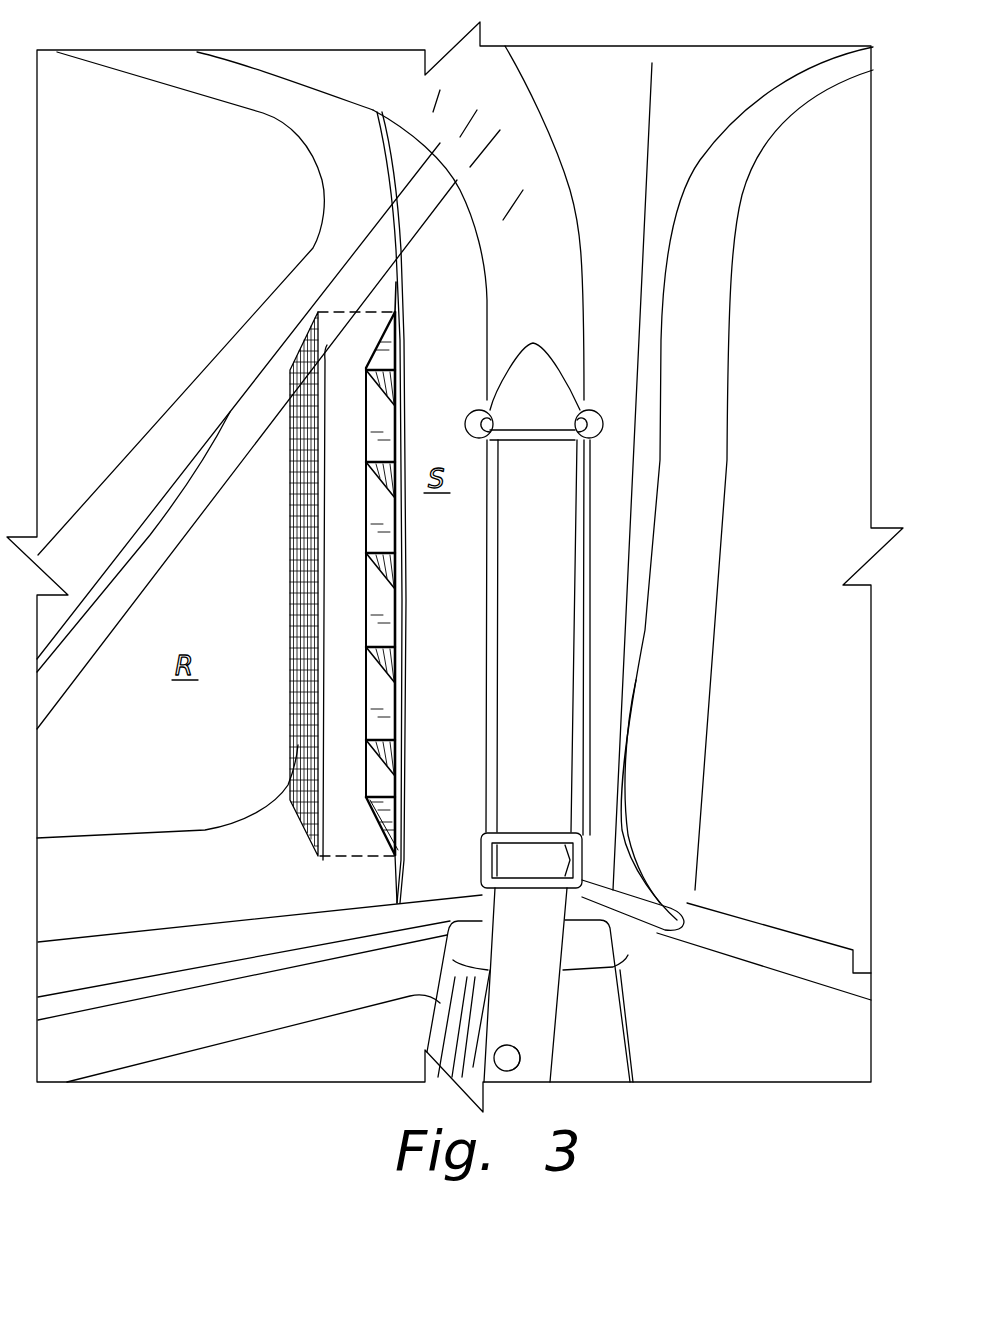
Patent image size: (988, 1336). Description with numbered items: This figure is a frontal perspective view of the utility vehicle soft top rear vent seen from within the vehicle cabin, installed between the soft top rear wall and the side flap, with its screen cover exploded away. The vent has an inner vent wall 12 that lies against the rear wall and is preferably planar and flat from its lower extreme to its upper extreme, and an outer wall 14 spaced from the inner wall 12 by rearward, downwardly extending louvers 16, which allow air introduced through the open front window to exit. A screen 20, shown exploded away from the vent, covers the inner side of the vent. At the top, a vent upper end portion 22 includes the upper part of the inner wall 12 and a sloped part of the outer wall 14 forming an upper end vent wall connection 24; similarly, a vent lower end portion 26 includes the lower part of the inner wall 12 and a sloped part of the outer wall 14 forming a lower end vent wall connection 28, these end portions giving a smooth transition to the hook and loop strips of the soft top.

The inner vent wall 12 is at (391, 592).
The outer wall 14 is at (380, 634).
The louvers 16 is at (380, 400).
The screen 20 is at (298, 716).
The vent upper end portion 22 is at (384, 358).
The upper end vent wall connection 24 is at (397, 294).
The vent lower end portion 26 is at (390, 813).
The lower end vent wall connection 28 is at (400, 880).